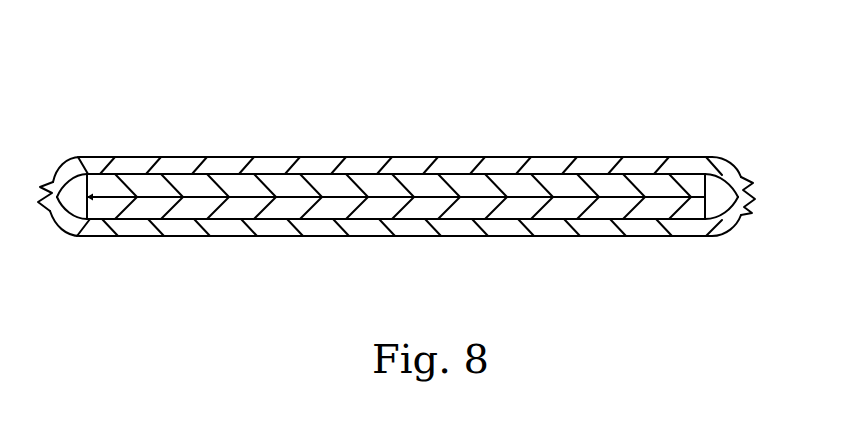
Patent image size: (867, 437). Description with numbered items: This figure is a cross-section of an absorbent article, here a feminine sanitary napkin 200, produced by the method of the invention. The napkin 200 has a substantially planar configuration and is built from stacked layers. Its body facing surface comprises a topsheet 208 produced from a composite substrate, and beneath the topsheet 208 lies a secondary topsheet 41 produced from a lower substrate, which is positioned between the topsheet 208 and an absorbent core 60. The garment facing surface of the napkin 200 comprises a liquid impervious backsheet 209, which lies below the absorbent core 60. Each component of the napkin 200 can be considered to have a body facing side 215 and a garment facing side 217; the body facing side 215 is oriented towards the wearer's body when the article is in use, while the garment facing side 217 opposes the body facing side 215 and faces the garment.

The feminine sanitary napkin 200 is at (294, 108).
The body facing side 215 is at (597, 157).
The garment facing side 217 is at (575, 237).
The topsheet 208 is at (650, 167).
The liquid impervious backsheet 209 is at (650, 228).
The secondary topsheet 41 is at (668, 185).
The absorbent core 60 is at (687, 210).